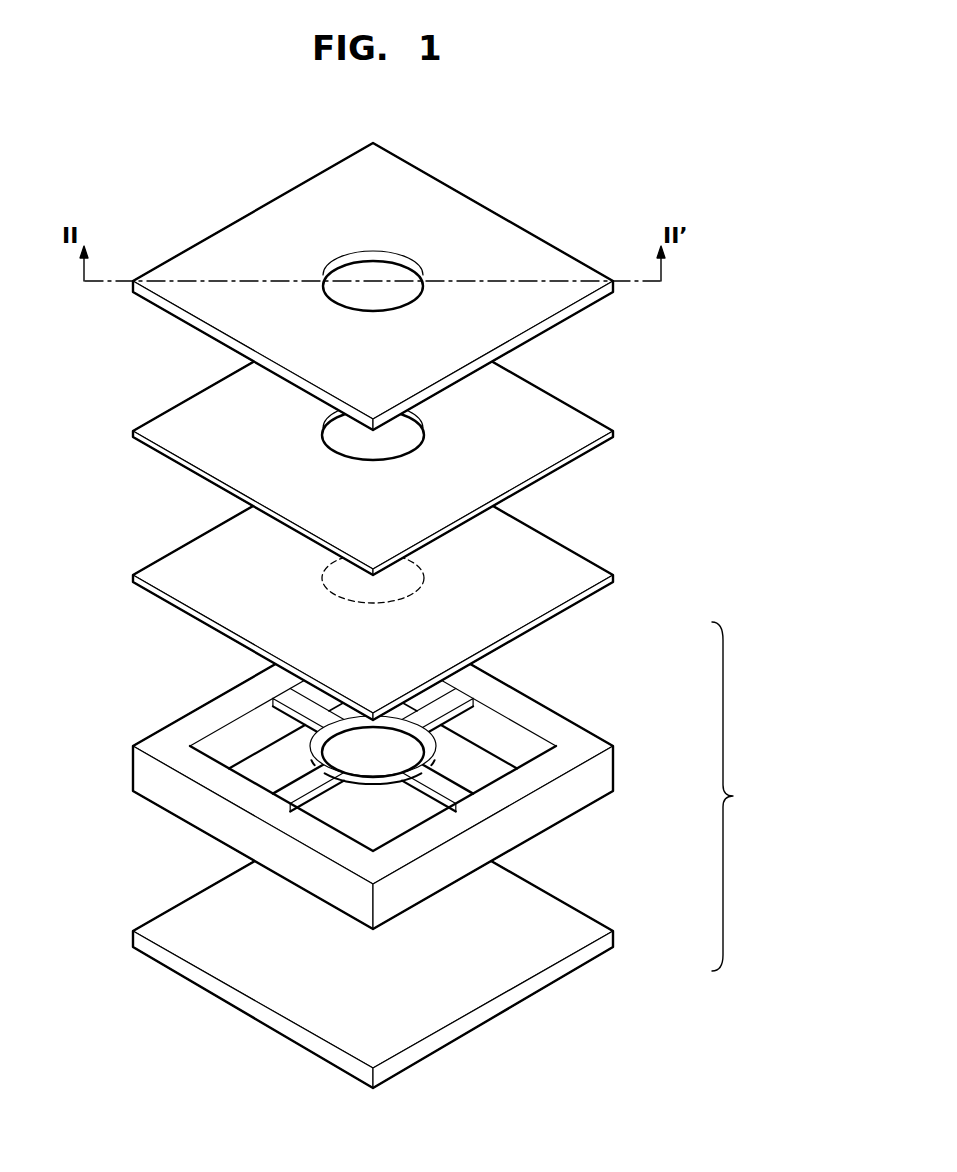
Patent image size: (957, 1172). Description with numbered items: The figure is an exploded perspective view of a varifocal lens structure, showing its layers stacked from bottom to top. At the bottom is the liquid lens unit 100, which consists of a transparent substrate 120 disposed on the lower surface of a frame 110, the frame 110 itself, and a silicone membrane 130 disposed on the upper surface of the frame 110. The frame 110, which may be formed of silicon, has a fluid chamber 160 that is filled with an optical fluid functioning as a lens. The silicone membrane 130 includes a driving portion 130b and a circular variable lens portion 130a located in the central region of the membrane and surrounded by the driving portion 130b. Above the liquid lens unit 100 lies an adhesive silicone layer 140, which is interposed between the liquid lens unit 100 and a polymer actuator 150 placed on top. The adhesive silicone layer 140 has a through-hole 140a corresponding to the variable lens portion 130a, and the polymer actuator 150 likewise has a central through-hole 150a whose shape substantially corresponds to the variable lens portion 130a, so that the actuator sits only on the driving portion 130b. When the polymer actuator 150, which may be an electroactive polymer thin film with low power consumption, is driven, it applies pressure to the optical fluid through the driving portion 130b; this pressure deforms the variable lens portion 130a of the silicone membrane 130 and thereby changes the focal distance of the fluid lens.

The liquid lens unit 100 is at (743, 796).
The frame 110 is at (610, 772).
The transparent substrate 120 is at (610, 945).
The silicone membrane 130 is at (605, 605).
The variable lens portion 130a is at (333, 577).
The driving portion 130b is at (208, 582).
The adhesive silicone layer 140 is at (558, 465).
The through-hole 140a is at (333, 413).
The polymer actuator 150 is at (558, 318).
The through-hole 150a is at (347, 262).
The fluid chamber 160 is at (507, 737).